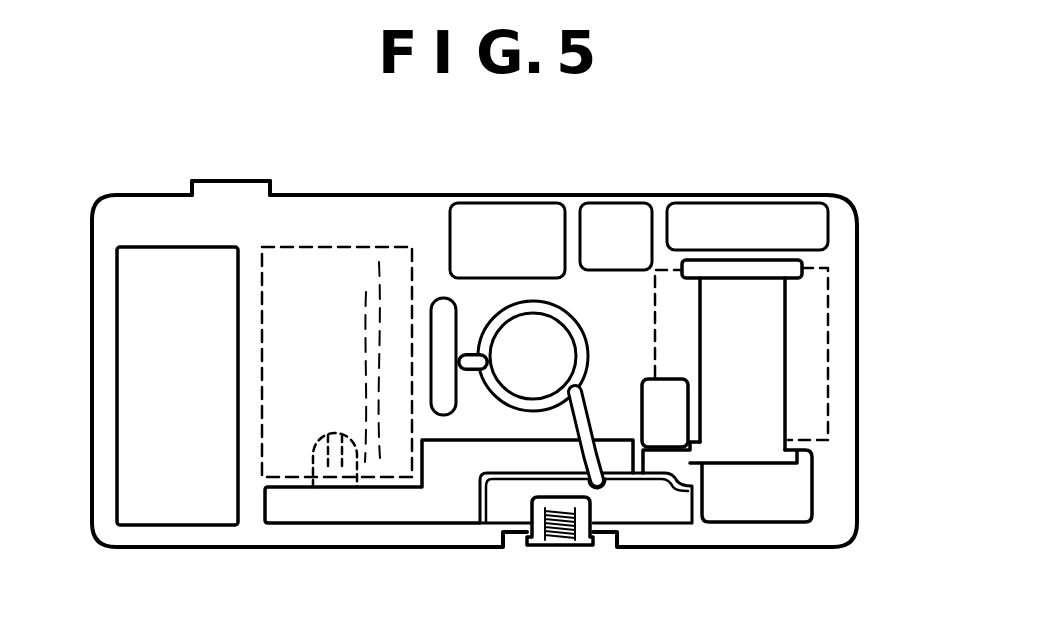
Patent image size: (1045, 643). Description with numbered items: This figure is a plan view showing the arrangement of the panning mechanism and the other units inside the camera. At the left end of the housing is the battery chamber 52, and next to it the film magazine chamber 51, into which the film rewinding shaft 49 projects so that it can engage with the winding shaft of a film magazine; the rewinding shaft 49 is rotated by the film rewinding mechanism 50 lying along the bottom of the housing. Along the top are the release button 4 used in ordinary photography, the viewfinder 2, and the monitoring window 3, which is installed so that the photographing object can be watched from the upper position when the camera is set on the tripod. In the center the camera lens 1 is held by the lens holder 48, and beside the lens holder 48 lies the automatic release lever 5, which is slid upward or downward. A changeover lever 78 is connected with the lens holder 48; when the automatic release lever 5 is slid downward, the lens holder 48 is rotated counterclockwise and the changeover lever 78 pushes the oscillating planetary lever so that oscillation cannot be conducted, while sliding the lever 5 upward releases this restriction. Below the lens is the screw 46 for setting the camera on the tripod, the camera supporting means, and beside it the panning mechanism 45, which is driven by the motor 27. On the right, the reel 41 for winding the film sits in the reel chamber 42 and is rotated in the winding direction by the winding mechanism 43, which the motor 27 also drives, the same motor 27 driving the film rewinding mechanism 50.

The camera lens 1 is at (530, 325).
The viewfinder 2 is at (490, 215).
The monitoring window 3 is at (615, 230).
The release button 4 is at (238, 193).
The automatic release lever 5 is at (440, 300).
The motor 27 is at (680, 412).
The reel 41 is at (768, 315).
The reel chamber 42 is at (813, 388).
The winding mechanism 43 is at (797, 497).
The panning mechanism 45 is at (665, 505).
The screw 46 is at (527, 503).
The lens holder 48 is at (499, 374).
The film rewinding shaft 49 is at (313, 448).
The film rewinding mechanism 50 is at (327, 505).
The film magazine chamber 51 is at (330, 265).
The battery chamber 52 is at (133, 408).
The changeover lever 78 is at (600, 488).